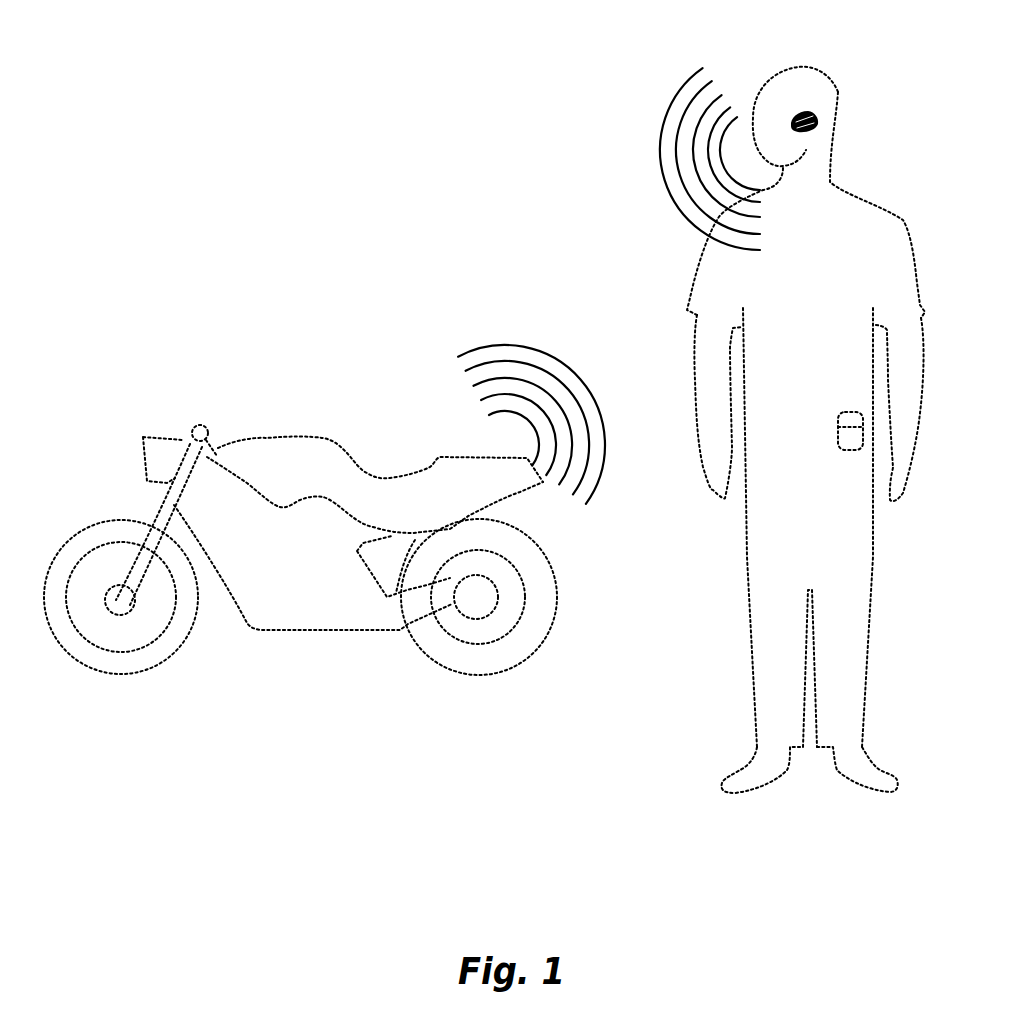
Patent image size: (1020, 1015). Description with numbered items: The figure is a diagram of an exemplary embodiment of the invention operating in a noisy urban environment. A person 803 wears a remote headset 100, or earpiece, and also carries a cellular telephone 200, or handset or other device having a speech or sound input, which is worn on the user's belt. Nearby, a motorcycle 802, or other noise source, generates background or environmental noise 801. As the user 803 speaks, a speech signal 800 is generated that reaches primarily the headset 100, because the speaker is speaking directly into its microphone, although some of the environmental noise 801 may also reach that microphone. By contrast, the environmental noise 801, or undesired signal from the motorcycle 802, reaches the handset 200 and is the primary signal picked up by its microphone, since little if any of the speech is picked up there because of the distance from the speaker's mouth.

The remote headset 100 is at (822, 108).
The cellular telephone 200 is at (830, 423).
The speech signal 800 is at (643, 111).
The environmental noise 801 is at (488, 332).
The motorcycle 802 is at (230, 388).
The person 803 is at (831, 266).